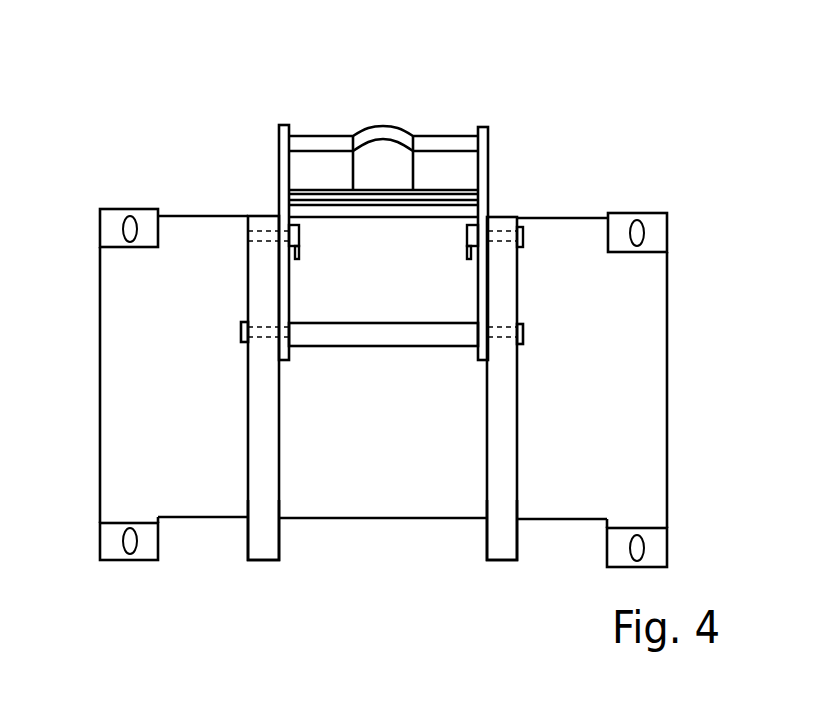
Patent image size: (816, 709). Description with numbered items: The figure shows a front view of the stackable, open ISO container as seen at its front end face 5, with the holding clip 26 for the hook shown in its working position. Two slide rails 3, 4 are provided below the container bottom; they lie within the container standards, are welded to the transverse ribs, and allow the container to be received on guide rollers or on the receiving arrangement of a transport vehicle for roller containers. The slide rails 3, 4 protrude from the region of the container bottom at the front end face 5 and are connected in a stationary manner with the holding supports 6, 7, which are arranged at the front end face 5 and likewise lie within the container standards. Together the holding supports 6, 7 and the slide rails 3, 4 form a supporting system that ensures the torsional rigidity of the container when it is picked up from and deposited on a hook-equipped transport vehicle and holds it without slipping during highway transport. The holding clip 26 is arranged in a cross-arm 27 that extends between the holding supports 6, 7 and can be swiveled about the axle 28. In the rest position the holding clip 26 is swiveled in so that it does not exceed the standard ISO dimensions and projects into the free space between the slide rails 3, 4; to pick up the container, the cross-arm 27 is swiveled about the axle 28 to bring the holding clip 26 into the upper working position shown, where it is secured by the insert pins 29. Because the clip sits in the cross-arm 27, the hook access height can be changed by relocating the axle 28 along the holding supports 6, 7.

The slide rail 3 is at (258, 548).
The slide rail 4 is at (498, 549).
The front end face 5 is at (608, 370).
The holding support 6 is at (263, 453).
The holding support 7 is at (507, 492).
The holding clip 26 is at (430, 138).
The cross-arm 27 is at (488, 143).
The axle 28 is at (523, 328).
The insert pin 29 is at (257, 233).